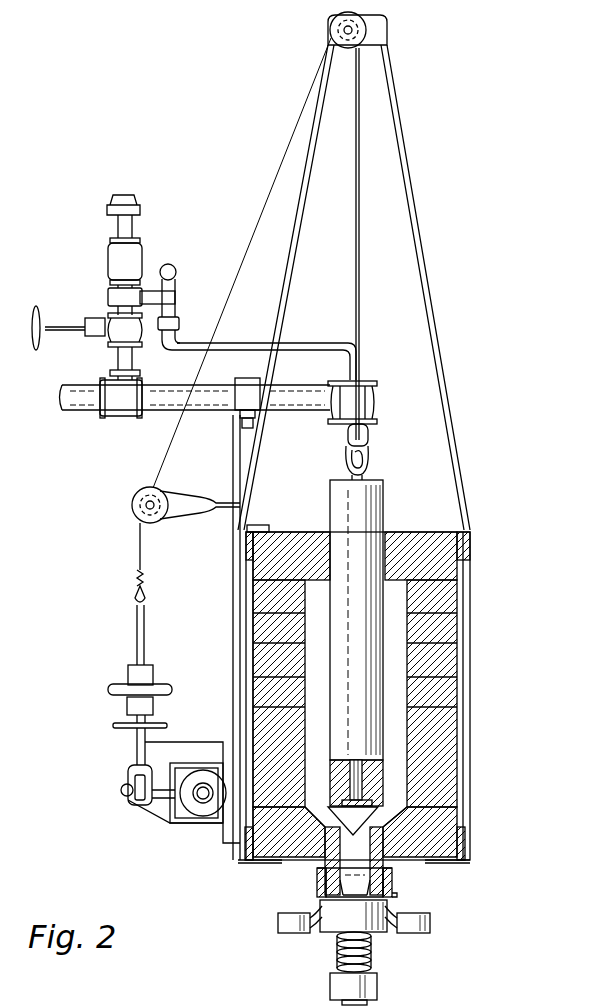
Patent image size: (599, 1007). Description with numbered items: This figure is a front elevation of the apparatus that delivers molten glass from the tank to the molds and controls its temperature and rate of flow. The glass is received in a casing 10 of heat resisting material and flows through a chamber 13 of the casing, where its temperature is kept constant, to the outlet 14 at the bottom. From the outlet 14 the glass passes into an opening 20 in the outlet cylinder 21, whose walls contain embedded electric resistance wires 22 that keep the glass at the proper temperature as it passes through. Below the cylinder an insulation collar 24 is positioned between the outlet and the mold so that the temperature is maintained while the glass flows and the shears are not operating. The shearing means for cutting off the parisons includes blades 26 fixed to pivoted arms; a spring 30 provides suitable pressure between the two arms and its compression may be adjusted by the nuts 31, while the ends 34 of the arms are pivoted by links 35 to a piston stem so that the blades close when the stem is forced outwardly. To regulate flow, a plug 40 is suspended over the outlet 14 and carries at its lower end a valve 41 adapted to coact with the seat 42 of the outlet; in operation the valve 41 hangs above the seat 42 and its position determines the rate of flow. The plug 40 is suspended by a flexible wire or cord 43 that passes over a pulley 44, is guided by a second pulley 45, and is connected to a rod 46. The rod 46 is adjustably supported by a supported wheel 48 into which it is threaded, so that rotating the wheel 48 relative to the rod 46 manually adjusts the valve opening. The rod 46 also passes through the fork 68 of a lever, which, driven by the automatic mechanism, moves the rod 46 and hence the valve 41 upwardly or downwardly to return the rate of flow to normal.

The casing 10 is at (445, 720).
The chamber 13 is at (440, 770).
The outlet 14 is at (383, 847).
The opening 20 is at (317, 883).
The outlet cylinder 21 is at (348, 883).
The electric resistance wires 22 is at (323, 863).
The insulation collar 24 is at (397, 895).
The blades 26 is at (345, 917).
The spring 30 is at (373, 950).
The nuts 31 is at (375, 987).
The ends of the arms 34 is at (430, 923).
The links 35 is at (430, 933).
The plug 40 is at (383, 512).
The valve 41 is at (403, 814).
The seat 42 is at (400, 827).
The flexible wire or cord 43 is at (362, 254).
The pulley 44 is at (366, 27).
The pulley 45 is at (132, 505).
The rod 46 is at (133, 633).
The wheel 48 is at (160, 688).
The fork 68 is at (153, 707).